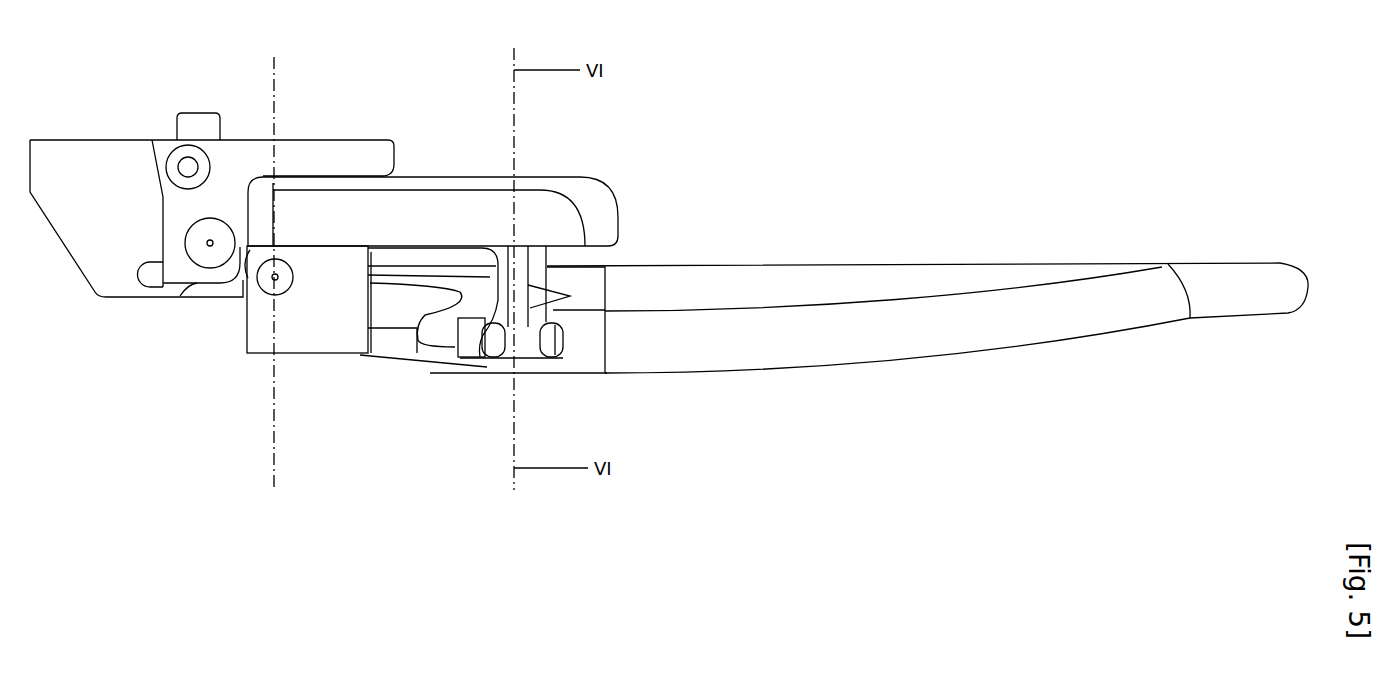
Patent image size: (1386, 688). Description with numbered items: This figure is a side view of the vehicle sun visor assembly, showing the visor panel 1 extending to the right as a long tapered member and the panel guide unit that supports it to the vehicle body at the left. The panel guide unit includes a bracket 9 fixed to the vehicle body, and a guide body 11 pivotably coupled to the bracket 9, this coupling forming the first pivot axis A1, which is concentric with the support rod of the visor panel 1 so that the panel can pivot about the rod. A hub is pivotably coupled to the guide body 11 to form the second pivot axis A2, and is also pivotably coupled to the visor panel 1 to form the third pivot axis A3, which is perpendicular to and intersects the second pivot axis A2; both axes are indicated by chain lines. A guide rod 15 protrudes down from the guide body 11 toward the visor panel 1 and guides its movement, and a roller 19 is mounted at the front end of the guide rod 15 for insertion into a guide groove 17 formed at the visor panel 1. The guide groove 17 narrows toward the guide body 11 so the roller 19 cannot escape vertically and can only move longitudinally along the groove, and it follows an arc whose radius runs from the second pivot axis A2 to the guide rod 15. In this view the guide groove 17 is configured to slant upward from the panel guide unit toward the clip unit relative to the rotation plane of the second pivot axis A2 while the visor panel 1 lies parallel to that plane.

The visor panel 1 is at (1042, 268).
The bracket 9 is at (330, 146).
The guide body 11 is at (557, 211).
The guide rod 15 is at (482, 305).
The guide groove 17 is at (560, 295).
The roller 19 is at (490, 370).
The first pivot axis A1 is at (210, 248).
The second pivot axis A2 is at (272, 279).
The third pivot axis A3 is at (274, 473).